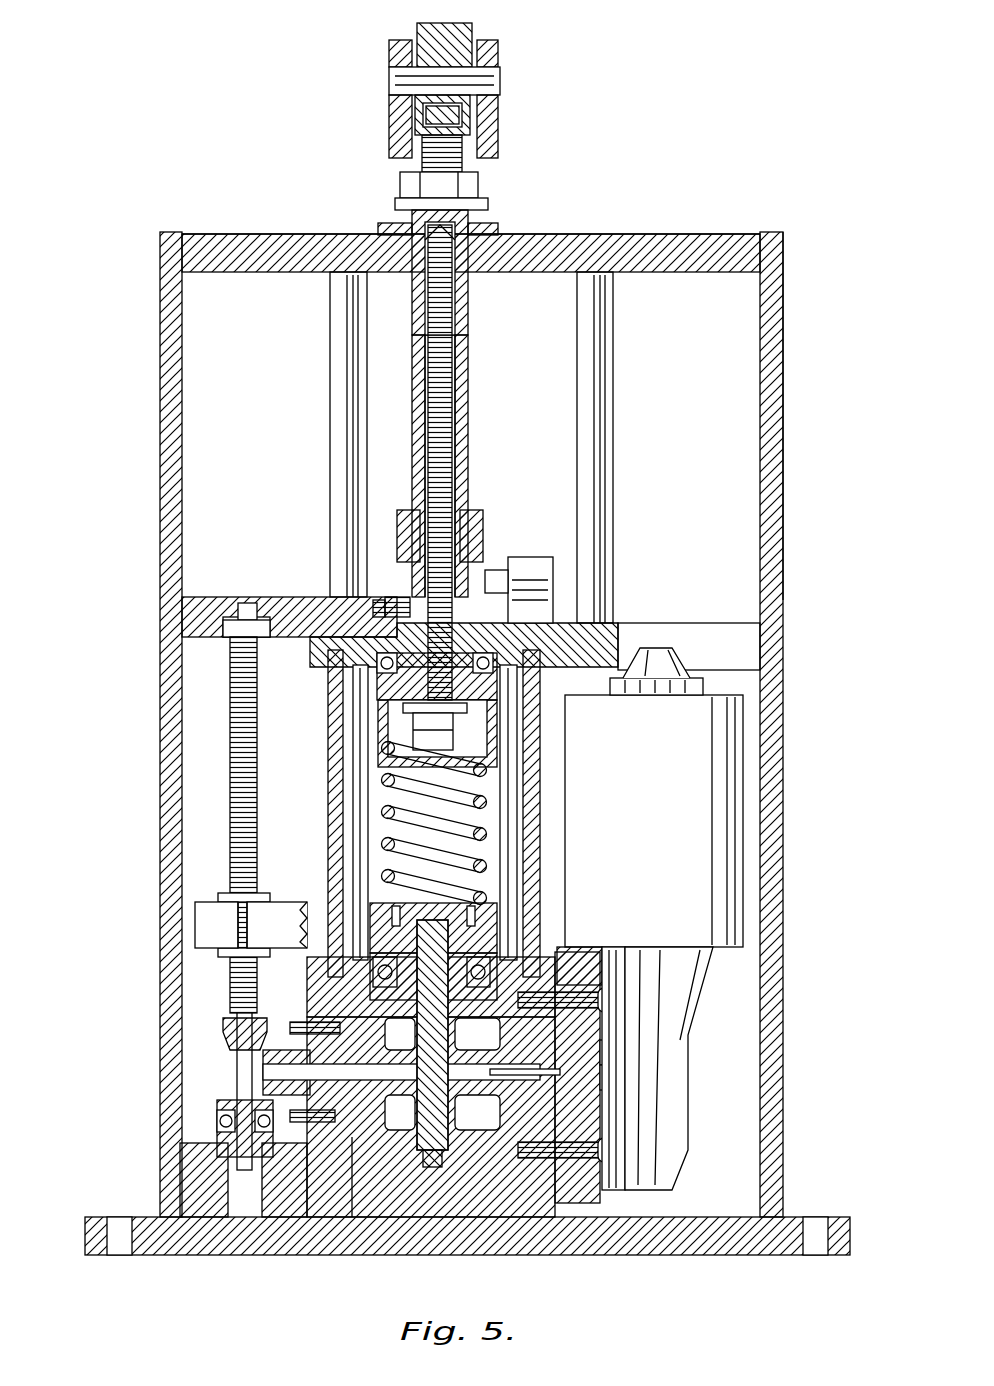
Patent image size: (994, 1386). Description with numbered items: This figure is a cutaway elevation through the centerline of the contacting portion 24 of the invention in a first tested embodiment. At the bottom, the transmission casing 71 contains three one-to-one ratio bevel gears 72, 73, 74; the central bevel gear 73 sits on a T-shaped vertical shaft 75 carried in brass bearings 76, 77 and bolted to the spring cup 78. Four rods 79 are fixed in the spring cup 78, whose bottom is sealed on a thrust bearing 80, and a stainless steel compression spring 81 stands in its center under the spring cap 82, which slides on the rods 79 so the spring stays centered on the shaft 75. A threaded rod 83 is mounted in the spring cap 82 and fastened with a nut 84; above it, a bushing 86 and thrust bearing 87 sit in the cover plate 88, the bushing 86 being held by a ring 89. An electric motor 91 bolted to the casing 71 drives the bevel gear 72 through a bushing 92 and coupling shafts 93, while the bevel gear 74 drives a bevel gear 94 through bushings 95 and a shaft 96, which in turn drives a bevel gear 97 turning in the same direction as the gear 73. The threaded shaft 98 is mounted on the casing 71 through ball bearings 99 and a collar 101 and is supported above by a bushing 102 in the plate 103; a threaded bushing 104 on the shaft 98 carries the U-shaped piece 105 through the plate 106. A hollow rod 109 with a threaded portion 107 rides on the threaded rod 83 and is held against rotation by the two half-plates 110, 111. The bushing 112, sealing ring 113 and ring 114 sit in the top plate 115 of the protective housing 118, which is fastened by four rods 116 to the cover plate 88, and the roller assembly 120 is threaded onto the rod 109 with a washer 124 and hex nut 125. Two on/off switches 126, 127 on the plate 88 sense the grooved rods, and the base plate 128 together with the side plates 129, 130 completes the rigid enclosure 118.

The drive assembly 24 is at (700, 172).
The transmission casing 71 is at (190, 1180).
The bevel gear 72 is at (463, 1112).
The central bevel gear 73 is at (402, 1112).
The bevel gear 74 is at (398, 1048).
The T-shaped vertical shaft 75 is at (466, 1048).
The brass bearing 76 is at (320, 1000).
The brass bearing 77 is at (432, 1167).
The spring cup 78 is at (520, 912).
The rods 79 is at (353, 833).
The thrust bearing 80 is at (497, 940).
The compression spring 81 is at (385, 785).
The spring cap 82 is at (413, 740).
The threaded rod 83 is at (468, 503).
The nut 84 is at (403, 710).
The bushing 86 is at (410, 596).
The thrust bearing 87 is at (377, 660).
The cover plate 88 is at (560, 625).
The ring 89 is at (373, 590).
The electric motor 91 is at (745, 812).
The bushing 92 is at (560, 1048).
The coupling shafts 93 is at (560, 1082).
The bevel gear 94 is at (265, 1090).
The bushings 95 is at (352, 1140).
The shaft 96 is at (263, 1072).
The bevel gear 97 is at (223, 1038).
The threaded shaft 98 is at (230, 790).
The ball bearings 99 is at (217, 1128).
The collar 101 is at (217, 1108).
The bushing 102 is at (240, 640).
The plate 103 is at (195, 597).
The bushing 104 is at (230, 892).
The U-shaped piece 105 is at (296, 902).
The plate 106 is at (195, 922).
The threaded portion 107 is at (468, 481).
The hollow rod 109 is at (460, 310).
The half-plate 110 is at (483, 524).
The half-plate 111 is at (397, 520).
The bushing 112 is at (470, 283).
The sealing ring 113 is at (498, 230).
The ring 114 is at (395, 228).
The plate 115 is at (700, 245).
The rods 116 is at (330, 330).
The protective housing 118 is at (797, 350).
The roller assembly 120 is at (518, 38).
The washer 124 is at (490, 205).
The hex nut 125 is at (400, 180).
The on/off switch 126 is at (555, 552).
The on/off switch 127 is at (552, 556).
The plate 128 is at (690, 1245).
The plate 129 is at (160, 741).
The plate 130 is at (783, 710).